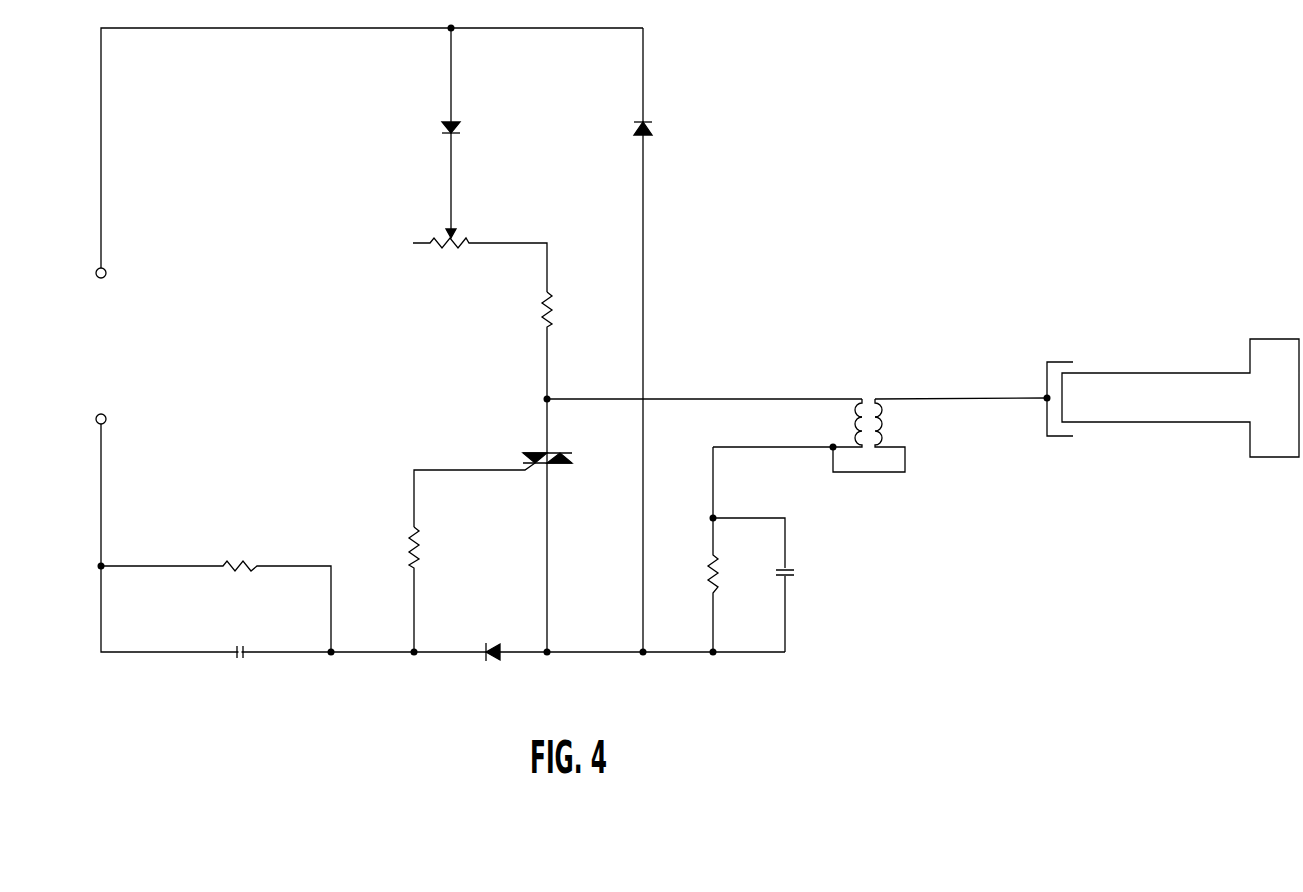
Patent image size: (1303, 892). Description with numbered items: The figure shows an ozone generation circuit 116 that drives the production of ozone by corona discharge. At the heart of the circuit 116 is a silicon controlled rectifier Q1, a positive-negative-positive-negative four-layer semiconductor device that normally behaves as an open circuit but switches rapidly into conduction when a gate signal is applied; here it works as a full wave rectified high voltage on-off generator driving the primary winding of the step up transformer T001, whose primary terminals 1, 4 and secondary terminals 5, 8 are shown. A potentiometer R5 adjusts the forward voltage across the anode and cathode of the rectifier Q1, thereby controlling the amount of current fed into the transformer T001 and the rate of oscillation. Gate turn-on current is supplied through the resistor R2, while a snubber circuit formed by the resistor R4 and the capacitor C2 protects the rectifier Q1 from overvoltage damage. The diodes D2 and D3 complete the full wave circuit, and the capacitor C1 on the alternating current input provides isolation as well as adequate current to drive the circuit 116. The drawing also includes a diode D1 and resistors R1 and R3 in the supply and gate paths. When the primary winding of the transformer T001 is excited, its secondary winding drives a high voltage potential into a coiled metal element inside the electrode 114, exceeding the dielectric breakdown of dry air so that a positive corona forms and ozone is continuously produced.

The electrode 114 is at (1162, 395).
The circuit 116 is at (708, 352).
The transformer primary pin 1 is at (851, 395).
The transformer primary pin 4 is at (787, 433).
The transformer secondary pin 5 is at (961, 395).
The transformer secondary pin 8 is at (869, 444).
The diode D1 1N4006 D1 is at (492, 133).
The diode D2 is at (681, 340).
The diode D3 is at (493, 622).
The resistor R1 3.3M R1 is at (216, 579).
The resistor R2 is at (436, 586).
The resistor R3 680 R3 is at (566, 469).
The resistor R4 is at (729, 549).
The potentiometer R5 is at (480, 234).
The capacitor C1 is at (244, 622).
The capacitor C2 is at (775, 585).
The silicon controlled rectifier Q1 is at (493, 462).
The step up transformer T001 is at (880, 396).